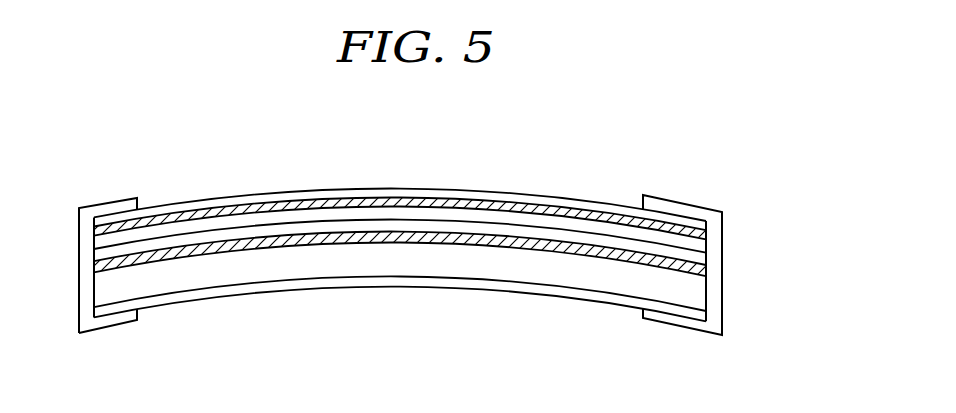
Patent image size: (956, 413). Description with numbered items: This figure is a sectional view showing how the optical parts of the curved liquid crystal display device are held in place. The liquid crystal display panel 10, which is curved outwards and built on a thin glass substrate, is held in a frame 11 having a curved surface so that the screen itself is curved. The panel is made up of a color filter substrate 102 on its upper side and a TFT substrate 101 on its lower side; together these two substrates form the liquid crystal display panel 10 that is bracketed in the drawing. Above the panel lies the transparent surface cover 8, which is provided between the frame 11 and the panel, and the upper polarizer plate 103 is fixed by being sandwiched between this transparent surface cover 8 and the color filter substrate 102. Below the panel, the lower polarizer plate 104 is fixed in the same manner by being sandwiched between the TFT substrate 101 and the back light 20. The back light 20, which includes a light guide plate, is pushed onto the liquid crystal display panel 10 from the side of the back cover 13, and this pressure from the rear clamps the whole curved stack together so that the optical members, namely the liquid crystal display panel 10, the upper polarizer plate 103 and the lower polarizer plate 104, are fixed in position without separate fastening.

The transparent surface cover 8 is at (532, 194).
The liquid crystal display panel 10 is at (790, 227).
The frame 11 is at (668, 200).
The back cover 13 is at (563, 297).
The back light 20 is at (470, 270).
The TFT substrate 101 is at (704, 262).
The color filter substrate 102 is at (704, 247).
The upper polarizer plate 103 is at (362, 197).
The lower polarizer plate 104 is at (307, 245).